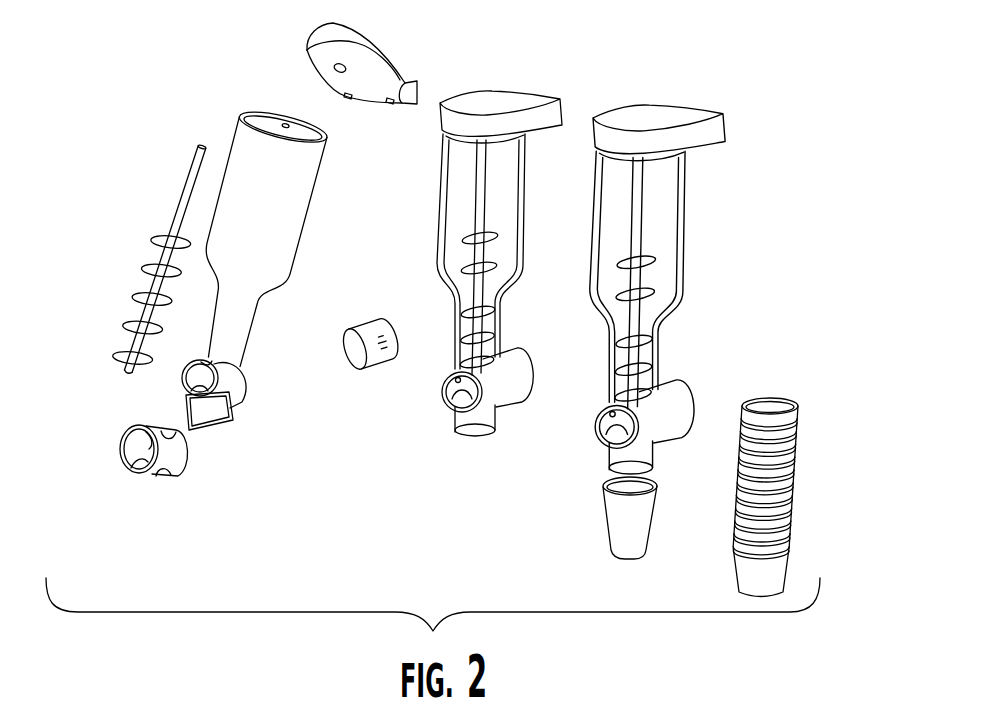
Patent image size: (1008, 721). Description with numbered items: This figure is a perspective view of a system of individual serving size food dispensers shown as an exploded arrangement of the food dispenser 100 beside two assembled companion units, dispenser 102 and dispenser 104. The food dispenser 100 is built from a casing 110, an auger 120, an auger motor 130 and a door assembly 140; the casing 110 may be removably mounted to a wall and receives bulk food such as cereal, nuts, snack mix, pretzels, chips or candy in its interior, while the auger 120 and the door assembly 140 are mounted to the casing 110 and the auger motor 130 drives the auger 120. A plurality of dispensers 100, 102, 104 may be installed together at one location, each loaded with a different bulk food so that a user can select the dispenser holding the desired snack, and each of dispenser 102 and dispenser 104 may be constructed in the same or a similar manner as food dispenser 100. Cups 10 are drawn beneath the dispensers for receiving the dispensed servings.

The individual serving size food dispenser 100 is at (213, 100).
The dispenser 102 is at (512, 85).
The dispenser 104 is at (659, 95).
The casing 110 is at (265, 280).
The auger 120 is at (183, 215).
The auger motor 130 is at (342, 70).
The door assembly 140 is at (106, 447).
The cup 10 is at (610, 527).